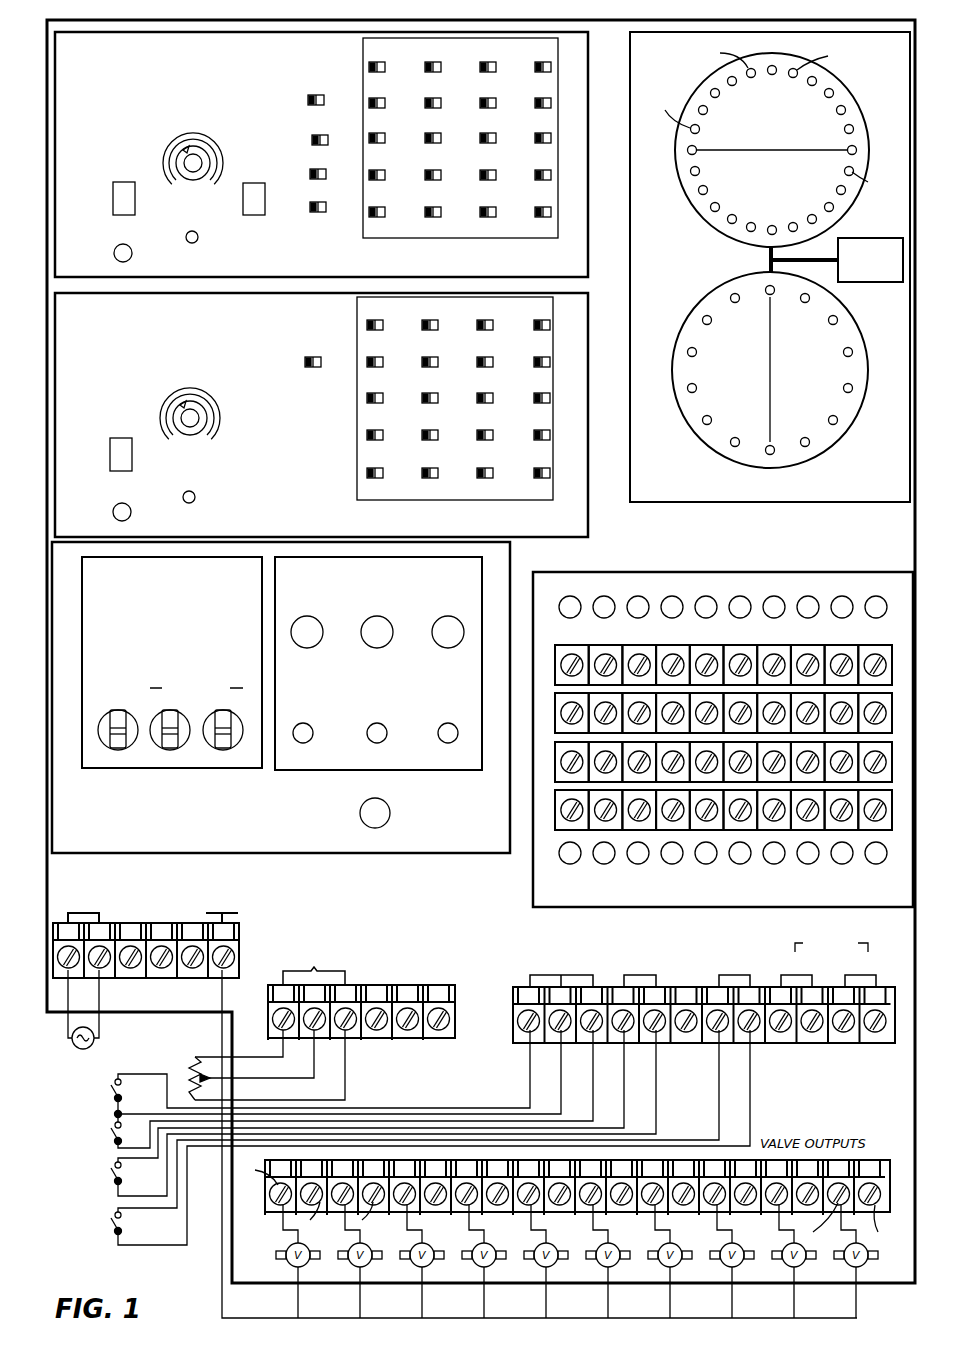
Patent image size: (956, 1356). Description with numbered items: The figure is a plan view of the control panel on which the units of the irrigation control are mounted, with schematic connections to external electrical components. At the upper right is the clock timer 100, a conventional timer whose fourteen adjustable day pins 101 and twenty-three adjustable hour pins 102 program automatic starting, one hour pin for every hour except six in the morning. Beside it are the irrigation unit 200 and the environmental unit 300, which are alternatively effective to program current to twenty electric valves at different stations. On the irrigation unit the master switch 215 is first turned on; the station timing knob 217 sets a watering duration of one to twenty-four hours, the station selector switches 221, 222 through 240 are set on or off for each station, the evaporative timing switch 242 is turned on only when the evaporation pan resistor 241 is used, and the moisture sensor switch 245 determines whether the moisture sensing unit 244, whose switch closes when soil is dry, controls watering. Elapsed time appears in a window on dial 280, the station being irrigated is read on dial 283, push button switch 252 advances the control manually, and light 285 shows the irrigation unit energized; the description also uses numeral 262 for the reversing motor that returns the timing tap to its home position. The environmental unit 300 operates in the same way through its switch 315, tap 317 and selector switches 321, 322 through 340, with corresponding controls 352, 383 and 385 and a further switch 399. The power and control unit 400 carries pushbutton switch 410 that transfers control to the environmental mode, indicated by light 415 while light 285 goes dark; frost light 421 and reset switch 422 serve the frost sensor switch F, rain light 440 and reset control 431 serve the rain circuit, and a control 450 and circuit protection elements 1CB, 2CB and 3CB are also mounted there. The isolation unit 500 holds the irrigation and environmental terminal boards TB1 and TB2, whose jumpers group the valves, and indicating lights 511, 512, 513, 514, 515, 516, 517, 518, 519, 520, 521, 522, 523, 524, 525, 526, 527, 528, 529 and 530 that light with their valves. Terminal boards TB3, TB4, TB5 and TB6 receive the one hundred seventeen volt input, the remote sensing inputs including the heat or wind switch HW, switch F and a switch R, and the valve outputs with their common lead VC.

The clock timer 100 is at (630, 145).
The day pins 101 is at (810, 444).
The hour pins 102 is at (845, 108).
The irrigation unit 200 is at (580, 90).
The master switch 215 is at (308, 100).
The station timing knob 217 is at (186, 163).
The station selector switch 221 is at (369, 62).
The station selector switch 222 is at (437, 61).
The station selector switch 240 is at (551, 212).
The evaporative timing switch 242 is at (310, 207).
The moisture sensor switch 245 is at (310, 174).
The reversing motor 262 is at (312, 140).
The elapsed time dial 280 is at (243, 200).
The station indicating dial 283 is at (113, 200).
The irrigation indicating light 285 is at (117, 260).
The push button switch 252 is at (187, 241).
The environmental unit 300 is at (578, 328).
The switch 315 is at (305, 362).
The tap 317 is at (196, 422).
The station selector switch 321 is at (367, 325).
The station selector switch 322 is at (432, 320).
The station selector switch 340 is at (550, 473).
The station advance button 352 is at (195, 497).
The station irrigating indicator 383 is at (110, 452).
The indicator lamp 385 is at (113, 512).
The station switch 19 399 is at (510, 462).
The power and control unit 400 is at (458, 848).
The pushbutton switch 410 is at (447, 743).
The environmental mode light 415 is at (446, 647).
The frost light 421 is at (378, 646).
The reset switch 422 is at (375, 743).
The reset control 431 is at (313, 733).
The rain indicating light 440 is at (310, 646).
The power on button 450 is at (388, 803).
The isolation unit 500 is at (533, 902).
The indicating light 511 is at (570, 600).
The indicating light 512 is at (604, 600).
The indicating light 513 is at (638, 600).
The indicating light 514 is at (672, 600).
The indicating light 515 is at (706, 600).
The indicating light 516 is at (740, 600).
The indicating light 517 is at (774, 600).
The indicating light 518 is at (808, 600).
The indicating light 519 is at (842, 600).
The indicating light 520 is at (876, 600).
The indicating light 521 is at (570, 862).
The indicating light 522 is at (604, 862).
The indicating light 523 is at (638, 862).
The indicating light 524 is at (672, 862).
The indicating light 525 is at (706, 862).
The indicating light 526 is at (740, 862).
The indicating light 527 is at (774, 862).
The indicating light 528 is at (808, 862).
The indicating light 529 is at (842, 862).
The indicating light 530 is at (876, 862).
The resistor 241 is at (200, 1057).
The moisture sensing unit 244 is at (118, 1236).
The valve circuit breaker 1CB is at (113, 750).
The timing circuit breaker 2CB is at (168, 750).
The timing circuit breaker 3CB is at (223, 750).
The irrigation terminal board TB1 is at (538, 690).
The environmental terminal board TB2 is at (548, 740).
The terminal block 3 TB3 is at (238, 930).
The terminal block 4 TB4 is at (443, 985).
The terminal block 5 TB5 is at (678, 987).
The terminal block 6 TB6 is at (265, 1198).
The heat and/or wind sensor switch HW is at (110, 1080).
The frost sensor switch F is at (108, 1125).
The rain switch R is at (108, 1165).
The valve common VC is at (222, 985).